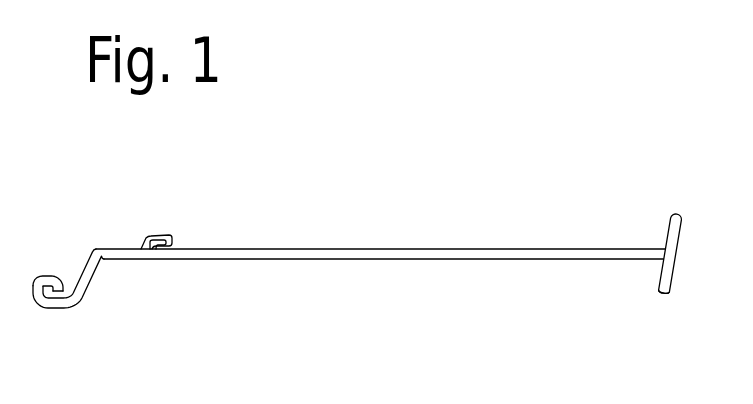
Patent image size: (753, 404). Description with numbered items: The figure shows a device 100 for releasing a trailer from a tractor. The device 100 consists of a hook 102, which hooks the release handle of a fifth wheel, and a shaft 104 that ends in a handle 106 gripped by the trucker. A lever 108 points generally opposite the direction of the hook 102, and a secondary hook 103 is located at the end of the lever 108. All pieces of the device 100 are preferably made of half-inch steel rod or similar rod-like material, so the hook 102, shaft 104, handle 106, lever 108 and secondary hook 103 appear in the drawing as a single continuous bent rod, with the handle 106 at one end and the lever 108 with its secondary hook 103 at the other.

The device 100 is at (364, 267).
The hook 102 is at (165, 225).
The secondary hook 103 is at (52, 268).
The shaft 104 is at (392, 238).
The handle 106 is at (673, 207).
The lever 108 is at (58, 312).